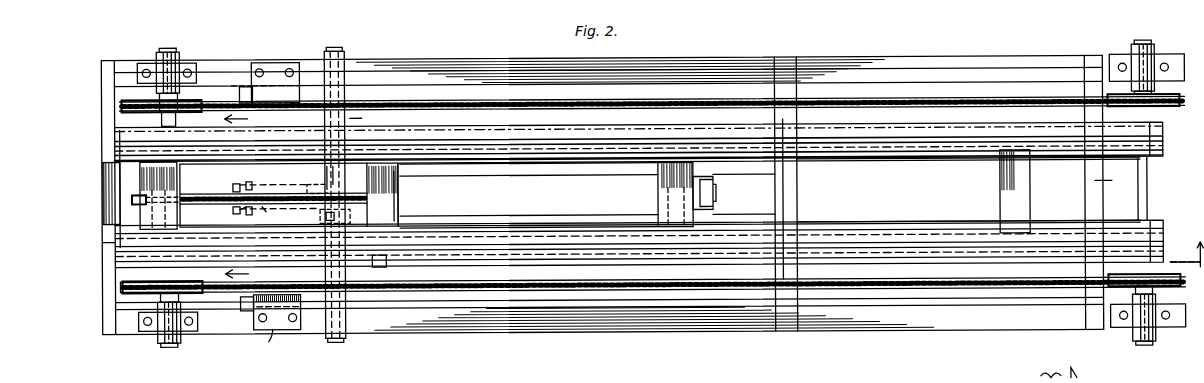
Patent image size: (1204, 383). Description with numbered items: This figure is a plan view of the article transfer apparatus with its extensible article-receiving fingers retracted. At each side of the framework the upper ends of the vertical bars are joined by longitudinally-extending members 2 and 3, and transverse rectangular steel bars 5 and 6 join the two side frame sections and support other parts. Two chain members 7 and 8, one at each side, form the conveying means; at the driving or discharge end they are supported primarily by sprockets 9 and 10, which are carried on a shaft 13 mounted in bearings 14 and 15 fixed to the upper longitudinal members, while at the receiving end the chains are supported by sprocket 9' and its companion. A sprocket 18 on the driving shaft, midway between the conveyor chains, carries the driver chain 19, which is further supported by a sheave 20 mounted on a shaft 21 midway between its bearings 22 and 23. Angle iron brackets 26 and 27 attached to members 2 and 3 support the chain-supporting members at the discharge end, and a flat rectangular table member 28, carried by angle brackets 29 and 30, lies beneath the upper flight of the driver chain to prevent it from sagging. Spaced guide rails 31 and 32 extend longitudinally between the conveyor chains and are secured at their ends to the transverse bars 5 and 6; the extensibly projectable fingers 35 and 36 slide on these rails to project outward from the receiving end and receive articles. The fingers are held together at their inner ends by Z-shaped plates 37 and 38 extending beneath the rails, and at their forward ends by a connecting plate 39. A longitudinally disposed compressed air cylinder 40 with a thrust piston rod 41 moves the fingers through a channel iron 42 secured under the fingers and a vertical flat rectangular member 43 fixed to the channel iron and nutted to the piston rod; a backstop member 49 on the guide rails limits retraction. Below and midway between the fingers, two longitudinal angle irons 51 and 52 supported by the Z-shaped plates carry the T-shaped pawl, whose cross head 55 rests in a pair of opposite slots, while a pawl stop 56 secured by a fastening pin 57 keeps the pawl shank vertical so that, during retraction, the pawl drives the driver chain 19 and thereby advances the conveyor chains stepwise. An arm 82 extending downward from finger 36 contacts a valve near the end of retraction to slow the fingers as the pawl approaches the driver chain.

The longitudinally-extending member 2 is at (537, 60).
The longitudinally-extending member 3 is at (590, 329).
The rectangular steel bar 5 is at (673, 194).
The rectangular steel bar 6 is at (120, 290).
The chain member 7 is at (497, 108).
The chain member 8 is at (575, 282).
The sprocket 9 is at (138, 105).
The sprocket 9' is at (1147, 192).
The sprocket 10 is at (130, 292).
The shaft 13 is at (170, 48).
The bearing 14 is at (148, 62).
The bearing 15 is at (176, 335).
The sprocket 18 is at (135, 193).
The driver chain 19 is at (220, 192).
The sheave 20 is at (318, 190).
The shaft 21 is at (366, 118).
The bearing 22 is at (327, 50).
The bearing 23 is at (325, 334).
The angle iron bracket 26 is at (280, 60).
The angle iron bracket 27 is at (268, 340).
The flat rectangular table member 28 is at (228, 95).
The angle bracket 29 is at (244, 85).
The angle bracket 30 is at (246, 310).
The guide rail 31 is at (112, 142).
The guide rail 32 is at (110, 248).
The extensibly projectable finger 35 is at (915, 155).
The extensibly projectable finger 36 is at (952, 230).
The Z-shaped plate 37 is at (404, 208).
The Z-shaped plate 38 is at (150, 214).
The connecting plate 39 is at (1000, 186).
The compressed air cylinder 40 is at (529, 195).
The thrust piston rod 41 is at (660, 183).
The channel iron 42 is at (670, 205).
The vertically disposed flat rectangular member 43 is at (1067, 372).
The backstop member 49 is at (104, 187).
The angle iron 51 is at (272, 190).
The angle iron 52 is at (319, 217).
The cross head 55 is at (236, 192).
The pawl stop 56 is at (264, 216).
The fastening pin 57 is at (242, 208).
The arm 82 is at (390, 270).